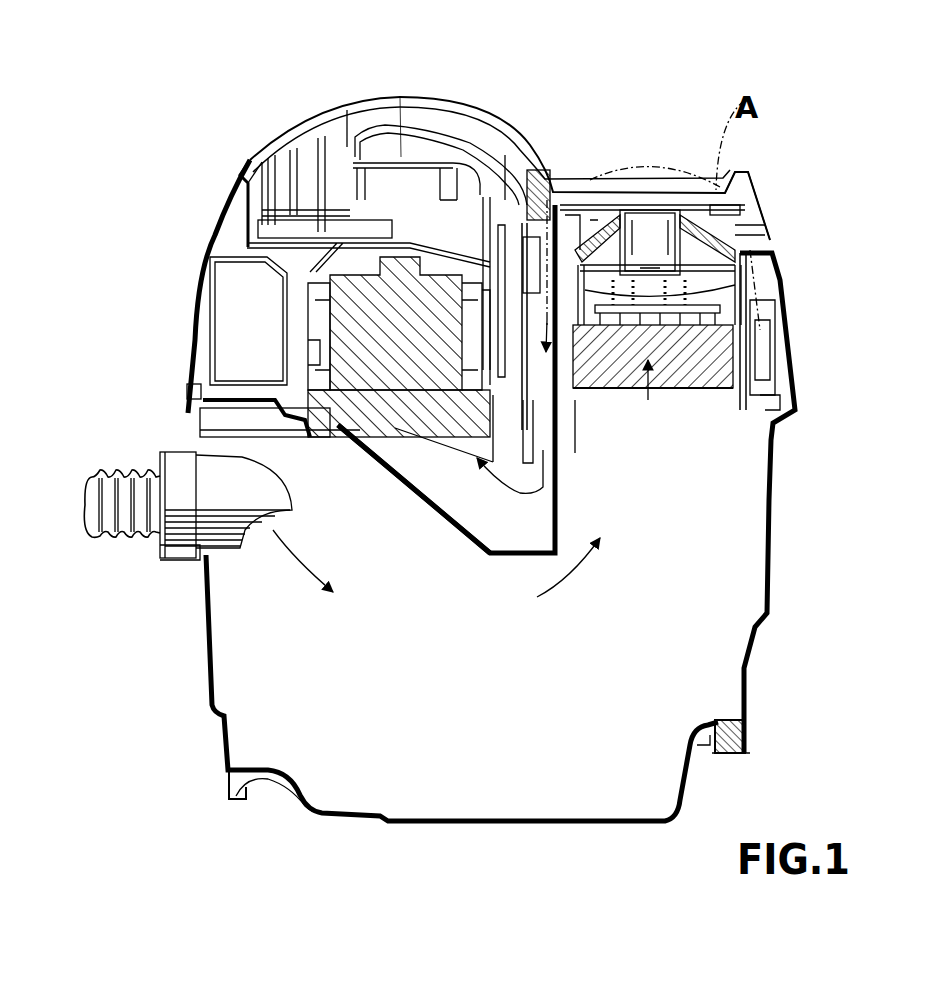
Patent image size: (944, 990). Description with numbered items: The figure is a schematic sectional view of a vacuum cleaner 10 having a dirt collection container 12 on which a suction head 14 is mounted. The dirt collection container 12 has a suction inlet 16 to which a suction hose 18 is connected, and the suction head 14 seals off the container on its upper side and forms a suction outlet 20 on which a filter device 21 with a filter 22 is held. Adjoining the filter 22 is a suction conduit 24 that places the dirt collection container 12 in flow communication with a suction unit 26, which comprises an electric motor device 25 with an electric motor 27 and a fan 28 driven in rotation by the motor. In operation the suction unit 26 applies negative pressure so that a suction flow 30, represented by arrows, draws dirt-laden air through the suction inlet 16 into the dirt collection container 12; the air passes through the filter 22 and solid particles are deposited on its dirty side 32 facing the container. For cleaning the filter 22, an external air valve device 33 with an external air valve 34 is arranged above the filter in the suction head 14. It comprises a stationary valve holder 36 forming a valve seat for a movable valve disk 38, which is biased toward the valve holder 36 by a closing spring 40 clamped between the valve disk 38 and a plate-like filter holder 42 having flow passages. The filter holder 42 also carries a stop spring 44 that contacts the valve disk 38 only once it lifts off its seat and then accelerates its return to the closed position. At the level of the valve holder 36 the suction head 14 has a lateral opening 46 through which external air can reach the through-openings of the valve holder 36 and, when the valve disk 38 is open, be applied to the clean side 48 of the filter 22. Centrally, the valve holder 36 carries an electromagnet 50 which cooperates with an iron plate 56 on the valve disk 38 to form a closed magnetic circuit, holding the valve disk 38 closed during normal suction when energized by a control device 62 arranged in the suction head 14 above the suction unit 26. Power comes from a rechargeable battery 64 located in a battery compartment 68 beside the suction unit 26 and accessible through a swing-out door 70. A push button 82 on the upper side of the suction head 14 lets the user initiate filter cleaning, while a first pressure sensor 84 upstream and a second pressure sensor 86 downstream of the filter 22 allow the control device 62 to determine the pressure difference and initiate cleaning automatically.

The vacuum cleaner 10 is at (785, 118).
The dirt collection container 12 is at (205, 650).
The suction head 14 is at (405, 90).
The suction inlet 16 is at (177, 533).
The suction hose 18 is at (127, 487).
The suction outlet 20 is at (735, 345).
The filter device 21 is at (683, 410).
The filter 22 is at (600, 395).
The suction conduit 24 is at (585, 258).
The electric motor device 25 is at (348, 337).
The suction unit 26 is at (323, 353).
The electric motor 27 is at (367, 328).
The fan 28 is at (362, 430).
The suction flow 30 is at (588, 598).
The dirty side 32 is at (720, 392).
The external air valve device 33 is at (743, 207).
The external air valve 34 is at (733, 225).
The valve holder 36 is at (575, 205).
The valve disk 38 is at (715, 245).
The closing spring 40 is at (722, 313).
The filter holder 42 is at (720, 390).
The stop spring 44 is at (648, 400).
The lateral opening 46 is at (750, 228).
The clean side 48 is at (722, 375).
The electromagnet 50 is at (665, 282).
The iron plate 56 is at (638, 320).
The control device 62 is at (340, 225).
The rechargeable battery 64 is at (225, 332).
The battery compartment 68 is at (237, 220).
The swing-out door 70 is at (220, 213).
The push button 82 is at (330, 145).
The first pressure sensor 84 is at (572, 453).
The second pressure sensor 86 is at (523, 280).